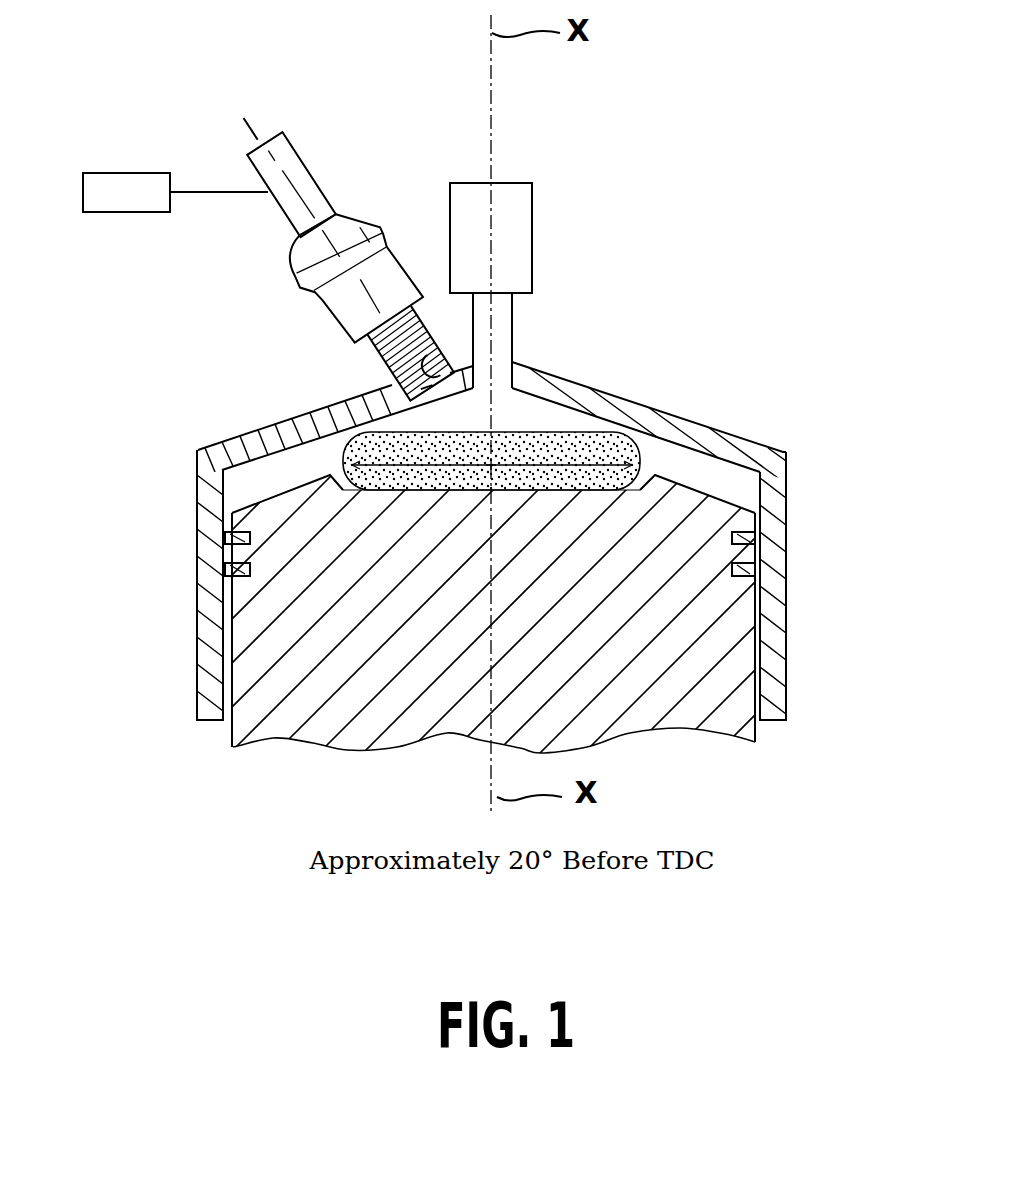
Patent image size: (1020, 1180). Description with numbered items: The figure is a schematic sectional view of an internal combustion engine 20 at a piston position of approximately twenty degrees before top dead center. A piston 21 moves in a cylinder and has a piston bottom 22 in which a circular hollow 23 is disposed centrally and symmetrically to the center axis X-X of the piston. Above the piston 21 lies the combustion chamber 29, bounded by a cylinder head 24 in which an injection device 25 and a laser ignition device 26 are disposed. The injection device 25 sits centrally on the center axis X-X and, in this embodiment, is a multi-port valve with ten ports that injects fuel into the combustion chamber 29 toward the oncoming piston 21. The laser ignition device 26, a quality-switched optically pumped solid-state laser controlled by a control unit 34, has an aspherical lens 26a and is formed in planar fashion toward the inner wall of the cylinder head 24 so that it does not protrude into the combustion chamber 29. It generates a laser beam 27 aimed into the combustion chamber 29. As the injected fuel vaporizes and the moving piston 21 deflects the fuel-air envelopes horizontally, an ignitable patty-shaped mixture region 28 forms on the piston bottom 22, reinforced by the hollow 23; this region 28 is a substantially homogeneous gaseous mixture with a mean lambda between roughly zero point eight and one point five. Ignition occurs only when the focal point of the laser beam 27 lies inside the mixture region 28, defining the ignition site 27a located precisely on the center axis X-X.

The internal combustion engine 20 is at (145, 398).
The piston 21 is at (510, 516).
The piston bottom 22 is at (735, 493).
The circular hollow 23 is at (582, 436).
The cylinder head 24 is at (282, 424).
The injection device 25 is at (513, 205).
The laser ignition device 26 is at (374, 228).
The aspherical lens 26a is at (426, 362).
The laser beam 27 is at (400, 387).
The ignition site 27a is at (568, 490).
The patty-shaped mixture region 28 is at (697, 412).
The combustion chamber 29 is at (696, 410).
The control unit 34 is at (120, 183).